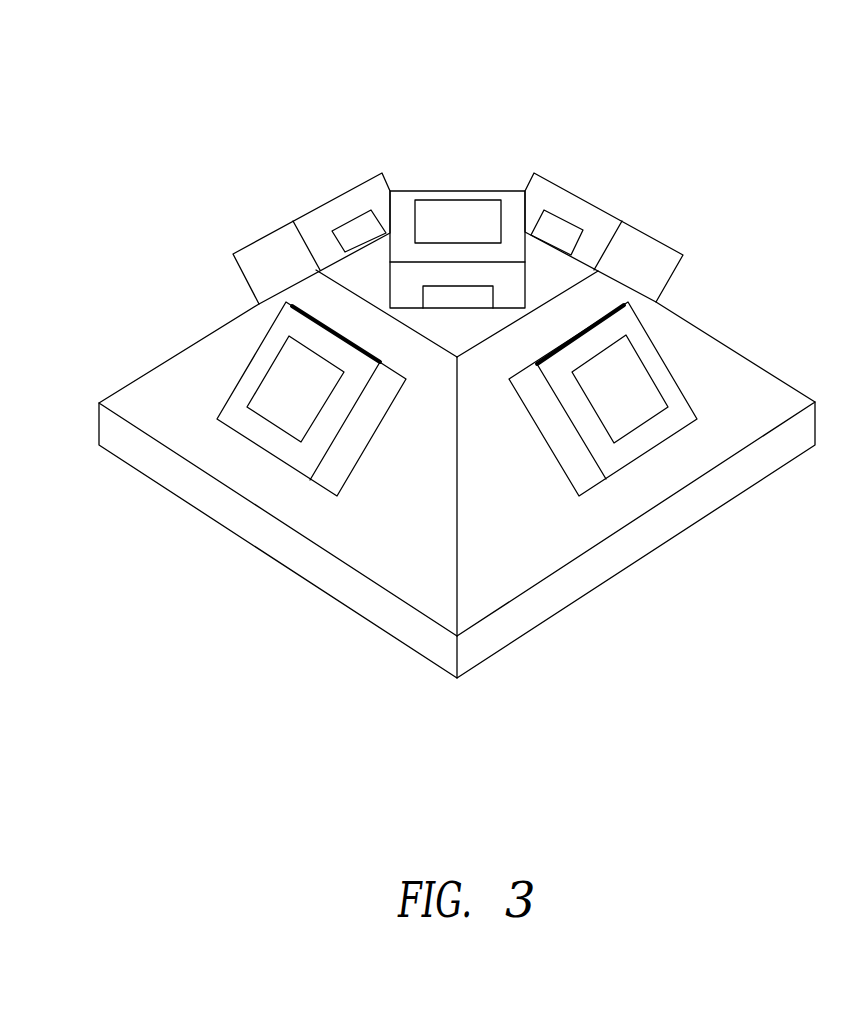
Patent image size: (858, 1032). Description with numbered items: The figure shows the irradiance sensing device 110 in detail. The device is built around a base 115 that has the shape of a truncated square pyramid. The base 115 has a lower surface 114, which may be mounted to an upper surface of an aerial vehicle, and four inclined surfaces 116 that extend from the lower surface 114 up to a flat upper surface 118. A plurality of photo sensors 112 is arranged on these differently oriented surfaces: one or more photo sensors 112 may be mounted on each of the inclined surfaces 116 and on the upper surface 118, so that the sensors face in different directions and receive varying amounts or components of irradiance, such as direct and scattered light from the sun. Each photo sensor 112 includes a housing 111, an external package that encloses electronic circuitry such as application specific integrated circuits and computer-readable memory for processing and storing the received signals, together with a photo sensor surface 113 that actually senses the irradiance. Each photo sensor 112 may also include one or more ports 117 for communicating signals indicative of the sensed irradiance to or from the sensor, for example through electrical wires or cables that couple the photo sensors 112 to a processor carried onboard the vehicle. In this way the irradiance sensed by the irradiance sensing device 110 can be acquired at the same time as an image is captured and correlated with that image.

The irradiance sensing device 110 is at (722, 83).
The housing 111 is at (552, 420).
The photo sensor 112 is at (458, 190).
The photo sensor surface 113 is at (630, 405).
The lower surface 114 is at (407, 647).
The base 115 is at (753, 362).
The inclined surface 116 is at (162, 383).
The port 117 is at (348, 218).
The upper surface 118 is at (560, 278).